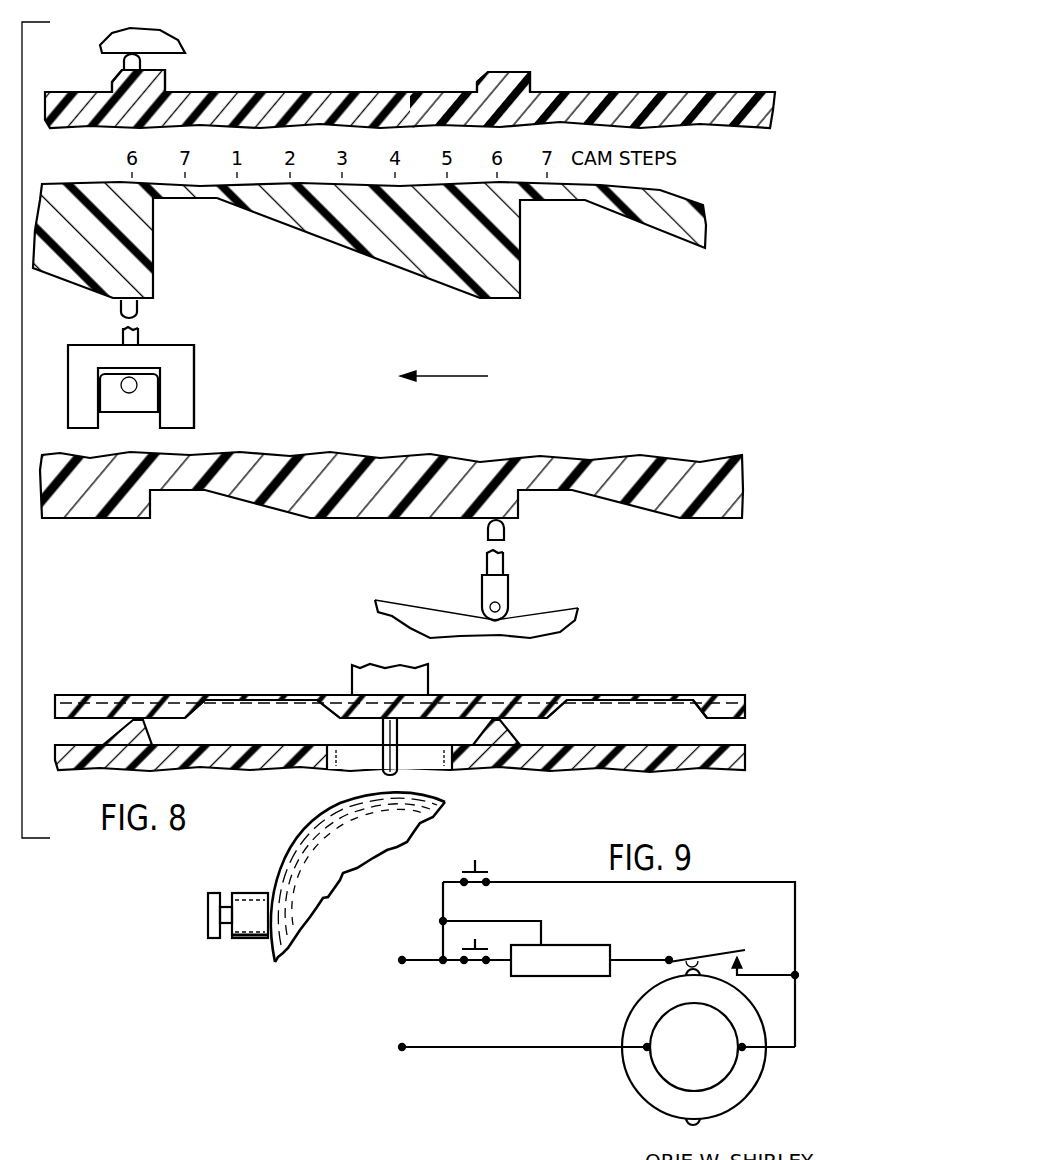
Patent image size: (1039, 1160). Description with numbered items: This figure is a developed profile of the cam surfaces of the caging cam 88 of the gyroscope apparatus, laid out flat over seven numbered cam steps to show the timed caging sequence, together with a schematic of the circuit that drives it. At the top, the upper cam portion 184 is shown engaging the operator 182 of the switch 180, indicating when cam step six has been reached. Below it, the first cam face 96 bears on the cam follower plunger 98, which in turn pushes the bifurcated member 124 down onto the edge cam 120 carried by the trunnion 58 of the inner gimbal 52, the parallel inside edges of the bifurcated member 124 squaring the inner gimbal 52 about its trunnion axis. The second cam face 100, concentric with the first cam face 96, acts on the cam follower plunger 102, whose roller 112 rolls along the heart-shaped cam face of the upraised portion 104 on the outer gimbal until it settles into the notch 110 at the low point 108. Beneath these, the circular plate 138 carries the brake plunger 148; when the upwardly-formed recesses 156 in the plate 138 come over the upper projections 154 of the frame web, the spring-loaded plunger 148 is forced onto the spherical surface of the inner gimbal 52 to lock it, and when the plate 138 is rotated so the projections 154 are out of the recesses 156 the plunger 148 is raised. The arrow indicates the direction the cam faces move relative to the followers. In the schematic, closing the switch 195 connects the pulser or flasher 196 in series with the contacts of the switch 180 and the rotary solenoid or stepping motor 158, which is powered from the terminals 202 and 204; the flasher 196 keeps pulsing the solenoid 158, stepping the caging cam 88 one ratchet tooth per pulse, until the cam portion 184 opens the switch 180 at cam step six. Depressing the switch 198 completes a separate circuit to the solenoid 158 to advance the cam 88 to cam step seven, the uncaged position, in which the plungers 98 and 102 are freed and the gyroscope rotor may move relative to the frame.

In FIG. 8, the switch 180 is at (168, 46).
In FIG. 9, the switch 180 is at (690, 957).
In FIG. 8, the operator 182 is at (122, 62).
In FIG. 8, the upper cam portion 184 is at (165, 77).
In FIG. 9, the upper cam portion 184 is at (686, 968).
In FIG. 8, the first cam face 96 is at (372, 261).
In FIG. 8, the cam follower plunger 98 is at (140, 311).
In FIG. 8, the edge cam 120 is at (98, 400).
In FIG. 8, the bifurcated member 124 is at (188, 386).
In FIG. 8, the second cam face 100 is at (298, 519).
In FIG. 8, the cam follower plunger 102 is at (506, 532).
In FIG. 8, the upraised portion 104 is at (402, 616).
In FIG. 8, the low point 108 is at (478, 614).
In FIG. 8, the notch 110 is at (504, 619).
In FIG. 8, the roller 112 is at (506, 615).
In FIG. 8, the circular plate 138 is at (522, 706).
In FIG. 8, the recess 156 is at (218, 706).
In FIG. 8, the upper projection 154 is at (150, 741).
In FIG. 8, the plunger 148 is at (398, 776).
In FIG. 8, the inner gimbal 52 is at (290, 844).
In FIG. 8, the trunnion 58 is at (259, 940).
In FIG. 9, the switch 198 is at (488, 870).
In FIG. 9, the pulser or flasher 196 is at (565, 945).
In FIG. 9, the switch 195 is at (475, 964).
In FIG. 9, the terminal 202 is at (401, 958).
In FIG. 9, the terminal 204 is at (401, 1045).
In FIG. 9, the caging cam 88 is at (631, 1031).
In FIG. 9, the rotary solenoid or stepping motor 158 is at (670, 1058).